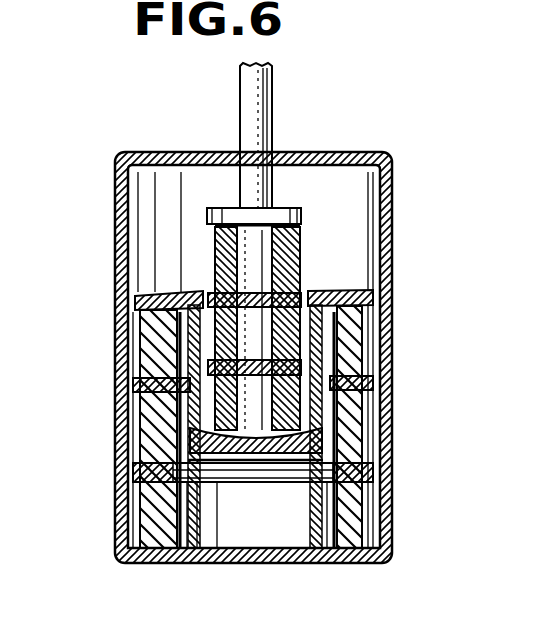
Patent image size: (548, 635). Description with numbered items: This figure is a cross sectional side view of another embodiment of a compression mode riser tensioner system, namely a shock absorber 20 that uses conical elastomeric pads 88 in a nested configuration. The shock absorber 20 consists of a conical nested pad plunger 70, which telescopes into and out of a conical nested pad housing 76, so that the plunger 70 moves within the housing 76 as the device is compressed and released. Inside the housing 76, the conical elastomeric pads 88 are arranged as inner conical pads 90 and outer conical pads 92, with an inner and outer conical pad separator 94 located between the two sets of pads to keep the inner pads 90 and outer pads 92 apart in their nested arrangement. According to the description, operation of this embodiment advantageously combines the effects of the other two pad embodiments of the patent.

The shock absorber 20 is at (386, 131).
The conical nested pad plunger 70 is at (276, 117).
The conical nested pad housing 76 is at (390, 190).
The conical elastomeric pads 88 is at (396, 319).
The inner conical pads 90 is at (298, 258).
The outer conical pads 92 is at (366, 408).
The inner and outer conical pad separator 94 is at (155, 293).